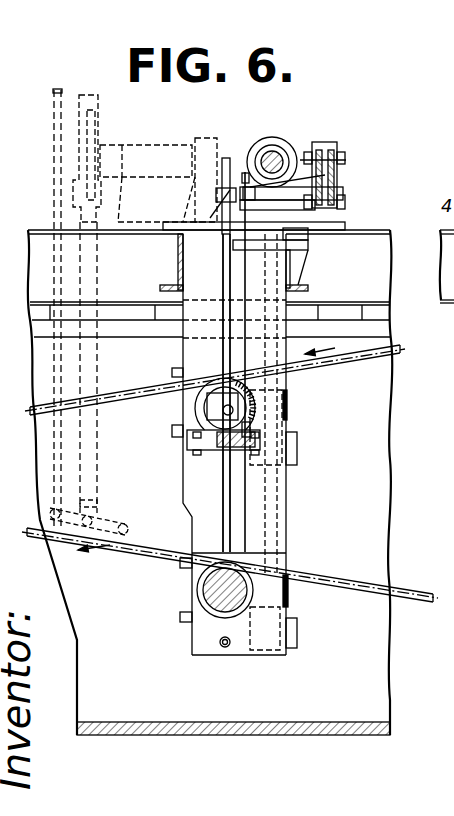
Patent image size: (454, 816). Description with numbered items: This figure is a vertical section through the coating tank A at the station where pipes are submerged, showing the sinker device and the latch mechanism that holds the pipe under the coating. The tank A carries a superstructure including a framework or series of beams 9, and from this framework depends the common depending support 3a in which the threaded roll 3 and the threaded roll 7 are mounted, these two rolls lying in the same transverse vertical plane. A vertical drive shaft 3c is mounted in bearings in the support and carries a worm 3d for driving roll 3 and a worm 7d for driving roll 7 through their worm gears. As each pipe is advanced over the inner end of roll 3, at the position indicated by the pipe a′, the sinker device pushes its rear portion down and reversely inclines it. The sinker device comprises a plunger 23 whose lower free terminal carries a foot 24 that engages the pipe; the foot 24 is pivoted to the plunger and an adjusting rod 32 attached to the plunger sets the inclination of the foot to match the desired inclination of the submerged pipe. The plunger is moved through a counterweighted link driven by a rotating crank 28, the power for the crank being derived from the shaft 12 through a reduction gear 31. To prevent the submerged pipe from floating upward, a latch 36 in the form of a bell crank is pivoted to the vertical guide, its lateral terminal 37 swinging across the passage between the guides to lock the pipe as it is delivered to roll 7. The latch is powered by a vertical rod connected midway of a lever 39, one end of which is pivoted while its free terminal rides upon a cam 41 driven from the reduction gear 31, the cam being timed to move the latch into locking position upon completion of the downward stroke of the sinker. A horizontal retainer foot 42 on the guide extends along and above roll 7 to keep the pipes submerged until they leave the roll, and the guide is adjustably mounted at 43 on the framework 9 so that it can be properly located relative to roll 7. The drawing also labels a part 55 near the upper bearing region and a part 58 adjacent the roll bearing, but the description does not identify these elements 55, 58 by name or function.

The coating tank A is at (372, 658).
The conveyor screw or threaded roll 3 is at (194, 412).
The common depending support 3a is at (258, 477).
The vertical drive shaft 3c is at (275, 512).
The worm 3d is at (290, 408).
The conveyor screw or threaded roll 7 is at (198, 590).
The worm 7d is at (288, 598).
The framework or series of beams 9 is at (178, 268).
The shaft 12 is at (276, 157).
The plunger 23 is at (82, 373).
The foot 24 is at (114, 522).
The rotating crank 28 is at (112, 124).
The reduction gear 31 is at (258, 148).
The adjusting rod 32 is at (56, 110).
The latch 36 is at (225, 528).
The lateral terminal 37 is at (230, 545).
The lever 39 is at (333, 147).
The cam 41 is at (341, 163).
The horizontal retainer foot 42 is at (222, 545).
The adjustable mounting 43 is at (215, 197).
The bolt 55 is at (222, 372).
The shoe 58 is at (235, 363).
The pipe a′ is at (394, 350).